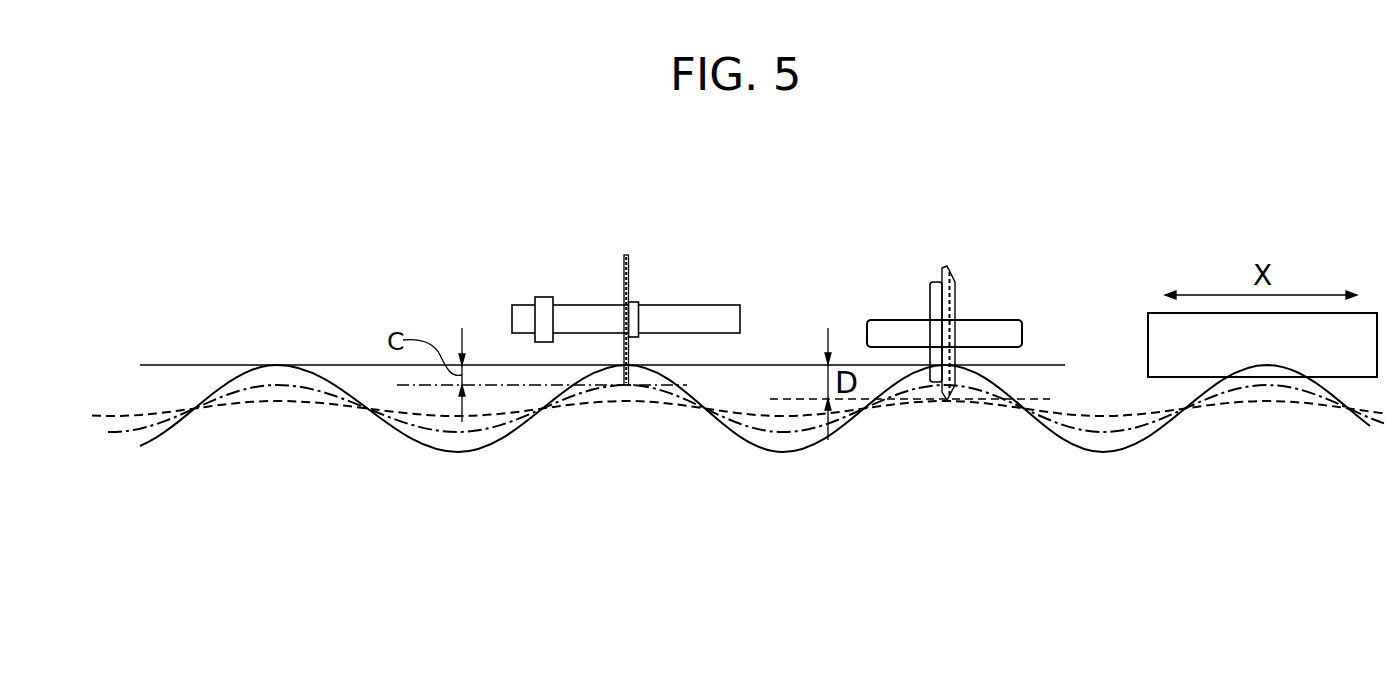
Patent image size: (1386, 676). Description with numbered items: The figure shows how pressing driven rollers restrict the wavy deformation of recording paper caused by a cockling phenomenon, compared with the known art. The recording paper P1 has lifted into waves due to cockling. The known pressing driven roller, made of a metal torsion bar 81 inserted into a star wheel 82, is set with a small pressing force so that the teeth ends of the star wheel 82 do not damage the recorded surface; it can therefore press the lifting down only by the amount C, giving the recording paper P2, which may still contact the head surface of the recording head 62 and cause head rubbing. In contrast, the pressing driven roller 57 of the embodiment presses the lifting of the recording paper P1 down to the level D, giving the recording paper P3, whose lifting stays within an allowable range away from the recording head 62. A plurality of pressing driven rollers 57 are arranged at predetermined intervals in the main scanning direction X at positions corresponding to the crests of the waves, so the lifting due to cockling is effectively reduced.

The pressing driven roller 57 is at (962, 280).
The recording head 62 is at (1148, 337).
The torsion bar 81 is at (682, 307).
The star wheel 82 is at (629, 268).
The recording paper P1 is at (151, 433).
The recording paper P2 is at (122, 432).
The recording paper P3 is at (120, 412).